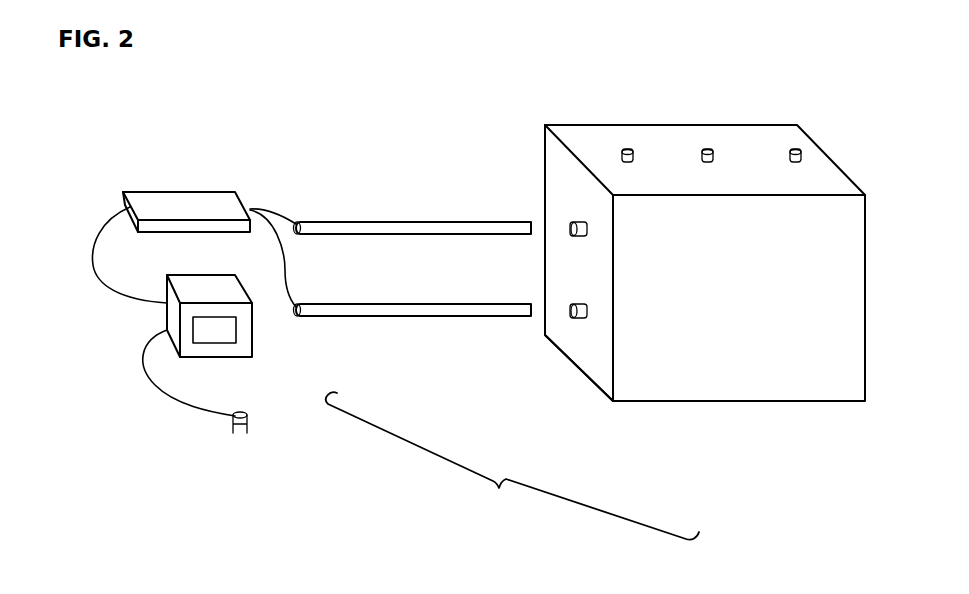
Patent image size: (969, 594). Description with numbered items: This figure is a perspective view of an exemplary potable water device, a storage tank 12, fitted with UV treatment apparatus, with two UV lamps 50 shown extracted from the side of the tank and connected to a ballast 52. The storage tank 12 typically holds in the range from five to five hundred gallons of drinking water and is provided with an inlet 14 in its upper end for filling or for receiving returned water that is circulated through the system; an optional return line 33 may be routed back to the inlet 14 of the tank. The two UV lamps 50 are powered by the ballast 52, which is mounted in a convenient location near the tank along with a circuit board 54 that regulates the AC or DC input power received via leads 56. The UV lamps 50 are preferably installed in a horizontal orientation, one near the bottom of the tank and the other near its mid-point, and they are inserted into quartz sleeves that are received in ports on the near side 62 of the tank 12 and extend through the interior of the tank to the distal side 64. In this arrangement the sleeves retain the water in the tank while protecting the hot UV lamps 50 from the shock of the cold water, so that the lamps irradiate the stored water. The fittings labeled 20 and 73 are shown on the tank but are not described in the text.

The storage tank 12 is at (512, 465).
The inlet 14 is at (709, 148).
The sensor terminal 20 is at (630, 148).
The return line 33 is at (797, 148).
The UV lamps 50 is at (387, 218).
The ballast 52 is at (160, 190).
The circuit board 54 is at (162, 317).
The leads 56 is at (228, 425).
The near side 62 is at (598, 337).
The distal side 64 is at (863, 343).
The side terminals 73 is at (578, 238).